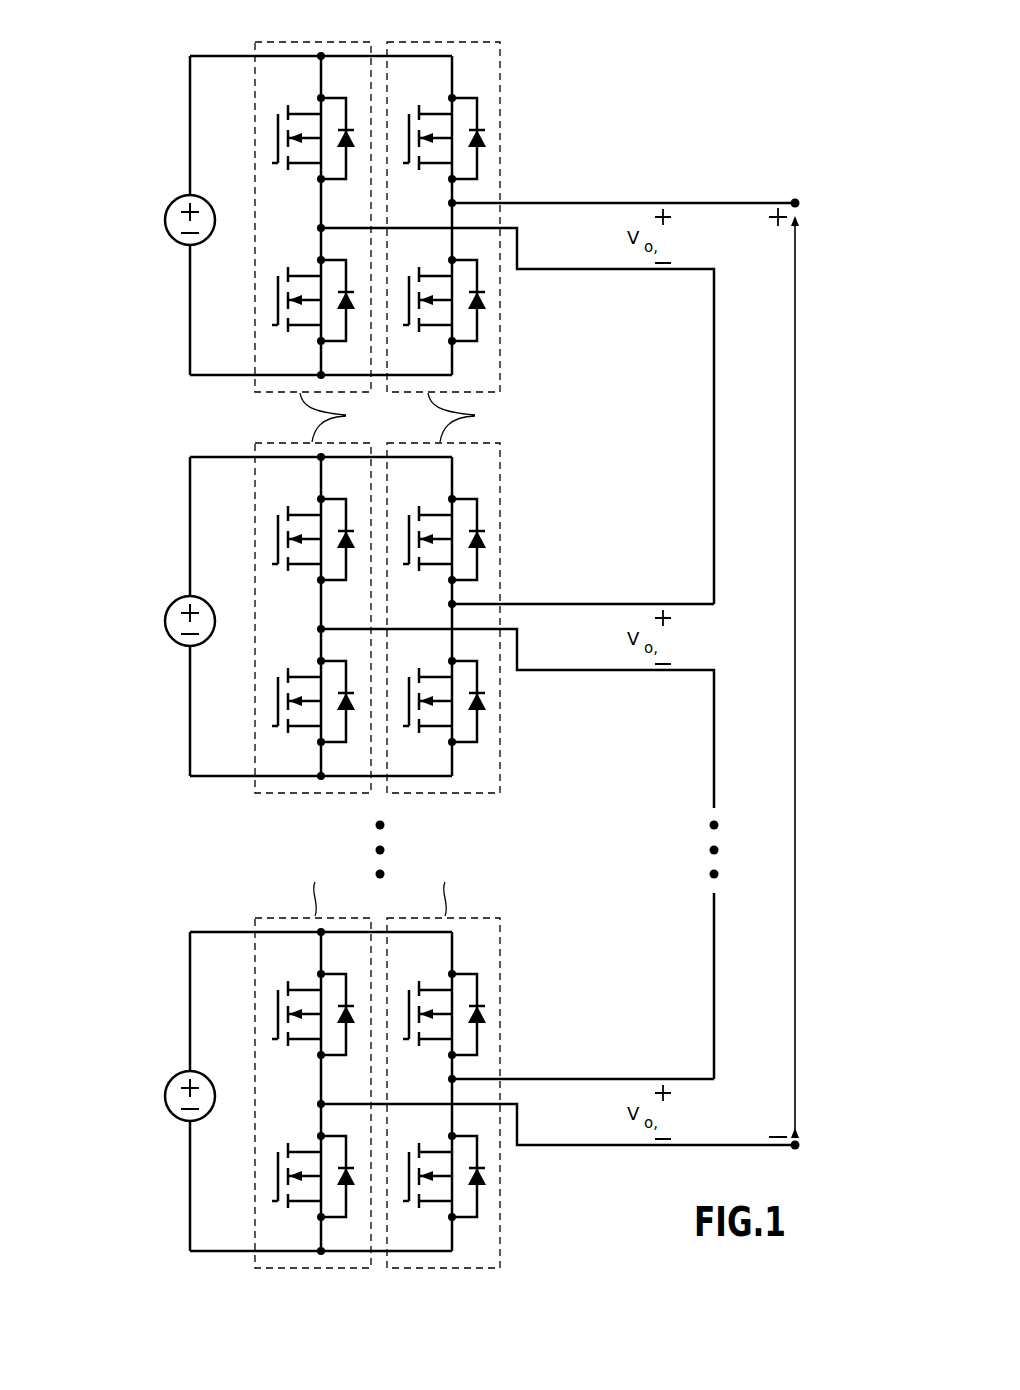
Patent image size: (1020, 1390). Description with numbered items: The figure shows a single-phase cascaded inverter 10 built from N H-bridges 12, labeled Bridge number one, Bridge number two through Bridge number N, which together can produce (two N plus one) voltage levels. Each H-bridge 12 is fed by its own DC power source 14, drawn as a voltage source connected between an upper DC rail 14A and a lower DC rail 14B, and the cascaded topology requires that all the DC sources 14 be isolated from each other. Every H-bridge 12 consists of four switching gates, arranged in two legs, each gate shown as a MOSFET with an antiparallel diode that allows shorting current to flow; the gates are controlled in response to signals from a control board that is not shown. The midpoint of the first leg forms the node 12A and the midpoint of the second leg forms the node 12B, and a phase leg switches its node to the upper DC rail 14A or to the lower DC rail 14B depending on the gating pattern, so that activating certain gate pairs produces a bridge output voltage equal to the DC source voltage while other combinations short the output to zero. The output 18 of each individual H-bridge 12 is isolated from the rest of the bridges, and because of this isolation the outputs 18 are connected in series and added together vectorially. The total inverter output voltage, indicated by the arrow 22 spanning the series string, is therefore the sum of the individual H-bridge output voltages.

The single-phase cascaded inverter 10 is at (750, 78).
The H-bridge 12 is at (170, 77).
The DC power source 14 is at (214, 206).
The upper DC rail 14A is at (225, 56).
The lower DC rail 14B is at (210, 377).
The node of Leg a 12A is at (558, 271).
The node of Leg b 12B is at (558, 204).
The output of the H-bridge 18 is at (637, 253).
The total output voltage 22 is at (797, 728).